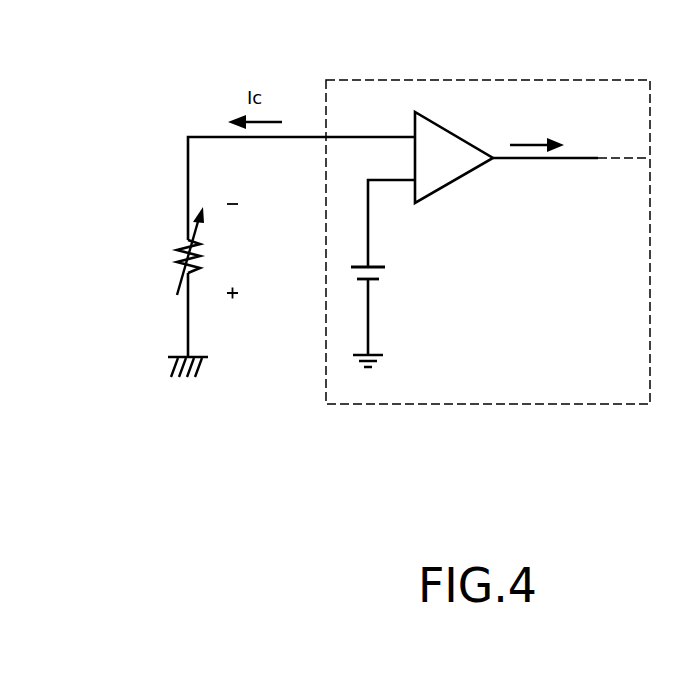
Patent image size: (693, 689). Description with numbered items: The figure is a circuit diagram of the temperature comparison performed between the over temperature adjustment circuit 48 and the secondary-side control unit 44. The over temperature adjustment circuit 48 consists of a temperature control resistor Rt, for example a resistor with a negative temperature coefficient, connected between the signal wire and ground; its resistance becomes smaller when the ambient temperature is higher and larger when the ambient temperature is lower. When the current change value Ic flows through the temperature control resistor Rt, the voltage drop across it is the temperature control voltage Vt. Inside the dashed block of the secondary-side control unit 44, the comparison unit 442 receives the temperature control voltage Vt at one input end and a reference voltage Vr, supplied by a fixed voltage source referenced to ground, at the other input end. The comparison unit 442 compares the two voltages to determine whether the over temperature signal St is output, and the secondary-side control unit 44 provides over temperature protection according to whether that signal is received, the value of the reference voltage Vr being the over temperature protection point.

The secondary-side control unit 44 is at (488, 210).
The comparator 442 is at (445, 172).
The over temperature adjustment circuit 48 is at (172, 237).